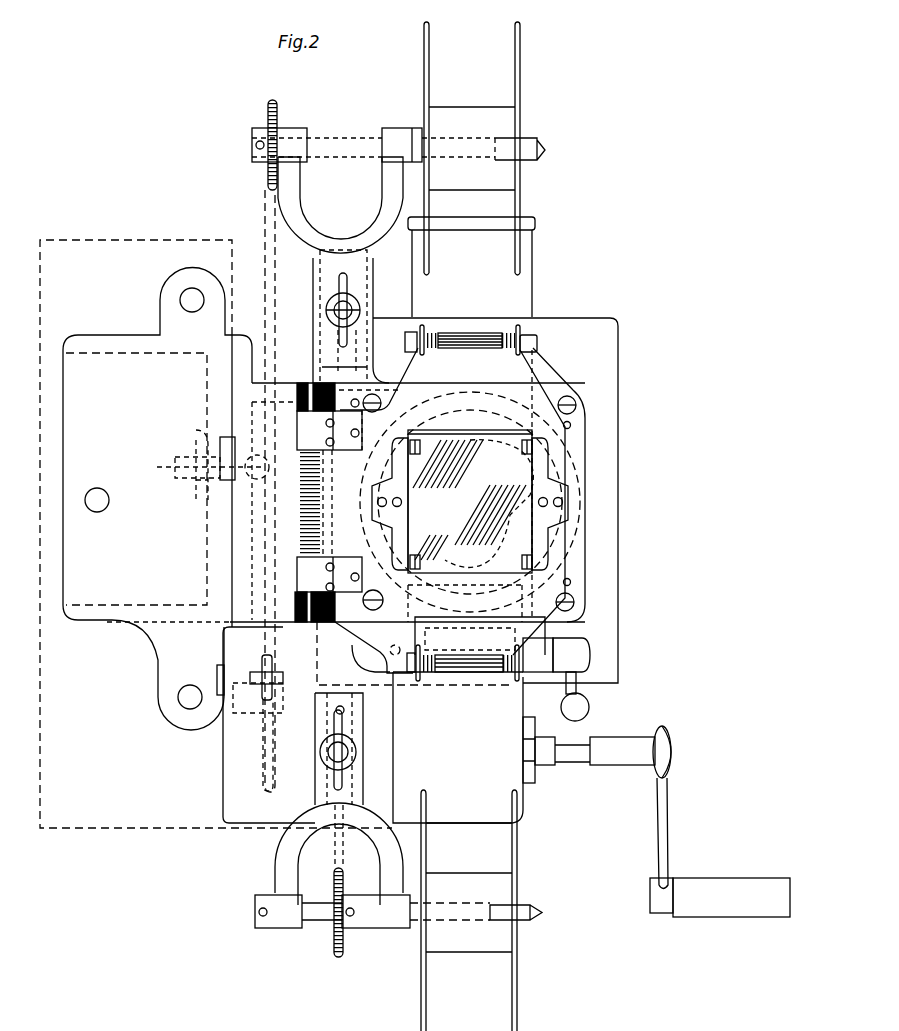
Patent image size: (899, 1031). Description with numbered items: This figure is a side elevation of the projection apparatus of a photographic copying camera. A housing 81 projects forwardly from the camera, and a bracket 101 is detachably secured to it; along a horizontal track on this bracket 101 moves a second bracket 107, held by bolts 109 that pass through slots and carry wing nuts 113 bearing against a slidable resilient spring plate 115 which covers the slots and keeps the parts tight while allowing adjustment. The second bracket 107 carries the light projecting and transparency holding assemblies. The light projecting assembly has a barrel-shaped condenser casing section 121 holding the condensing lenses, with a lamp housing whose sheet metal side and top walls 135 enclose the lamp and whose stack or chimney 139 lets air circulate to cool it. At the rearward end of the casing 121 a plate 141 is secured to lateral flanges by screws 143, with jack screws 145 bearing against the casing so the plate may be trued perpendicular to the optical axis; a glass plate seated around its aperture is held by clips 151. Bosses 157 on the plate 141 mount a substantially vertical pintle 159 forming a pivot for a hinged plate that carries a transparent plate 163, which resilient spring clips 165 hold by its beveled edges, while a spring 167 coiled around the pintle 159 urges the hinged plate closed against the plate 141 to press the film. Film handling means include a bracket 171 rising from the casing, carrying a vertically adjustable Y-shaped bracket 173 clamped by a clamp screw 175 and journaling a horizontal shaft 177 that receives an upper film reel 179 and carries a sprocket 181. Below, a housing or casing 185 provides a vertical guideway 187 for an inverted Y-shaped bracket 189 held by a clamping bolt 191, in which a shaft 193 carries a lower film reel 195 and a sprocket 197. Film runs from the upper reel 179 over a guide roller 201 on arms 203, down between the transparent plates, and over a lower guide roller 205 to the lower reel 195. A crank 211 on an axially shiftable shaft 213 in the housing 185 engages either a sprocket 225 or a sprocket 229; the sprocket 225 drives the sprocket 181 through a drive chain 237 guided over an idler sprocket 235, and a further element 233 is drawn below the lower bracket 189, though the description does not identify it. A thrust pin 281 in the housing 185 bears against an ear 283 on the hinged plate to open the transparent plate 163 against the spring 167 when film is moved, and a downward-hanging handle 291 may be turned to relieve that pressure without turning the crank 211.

The housing 81 is at (116, 830).
The bracket 101 is at (106, 341).
The second bracket 107 is at (243, 373).
The bolts 109 is at (207, 433).
The wing nuts 113 is at (181, 458).
The spring plate 115 is at (184, 489).
The casing section 121 is at (612, 623).
The side and top walls 135 is at (591, 318).
The stack or chimney 139 is at (535, 271).
The plate 141 is at (587, 441).
The screws 143 is at (555, 384).
The jack screws 145 is at (576, 408).
The clips 151 is at (572, 561).
The bosses 157 is at (306, 383).
The pintle 159 is at (305, 545).
The transparent plate 163 is at (420, 489).
The spring clips 165 is at (568, 481).
The spring 167 is at (308, 500).
The bracket 171 is at (313, 291).
The Y-shaped bracket 173 is at (297, 208).
The clamp screw 175 is at (353, 306).
The shaft 177 is at (360, 138).
The film reel 179 is at (519, 90).
The sprocket 181 is at (266, 103).
The housing or casing 185 is at (420, 720).
The guideway 187 is at (313, 805).
The Y-shaped bracket 189 is at (278, 851).
The clamping bolt 191 is at (350, 771).
The shaft 193 is at (310, 926).
The film reel 195 is at (518, 993).
The sprocket 197 is at (345, 941).
The guide roller 201 is at (468, 333).
The arms 203 is at (530, 344).
The guide roller 205 is at (495, 679).
The crank 211 is at (668, 831).
The shaft 213 is at (576, 763).
The sprocket 225 is at (272, 745).
The sprocket 229 is at (345, 712).
The rod 233 is at (345, 846).
The idler or guiding sprocket 235 is at (262, 661).
The drive chain 237 is at (262, 206).
The thrust pin 281 is at (391, 656).
The ear 283 is at (372, 627).
The handle 291 is at (591, 708).